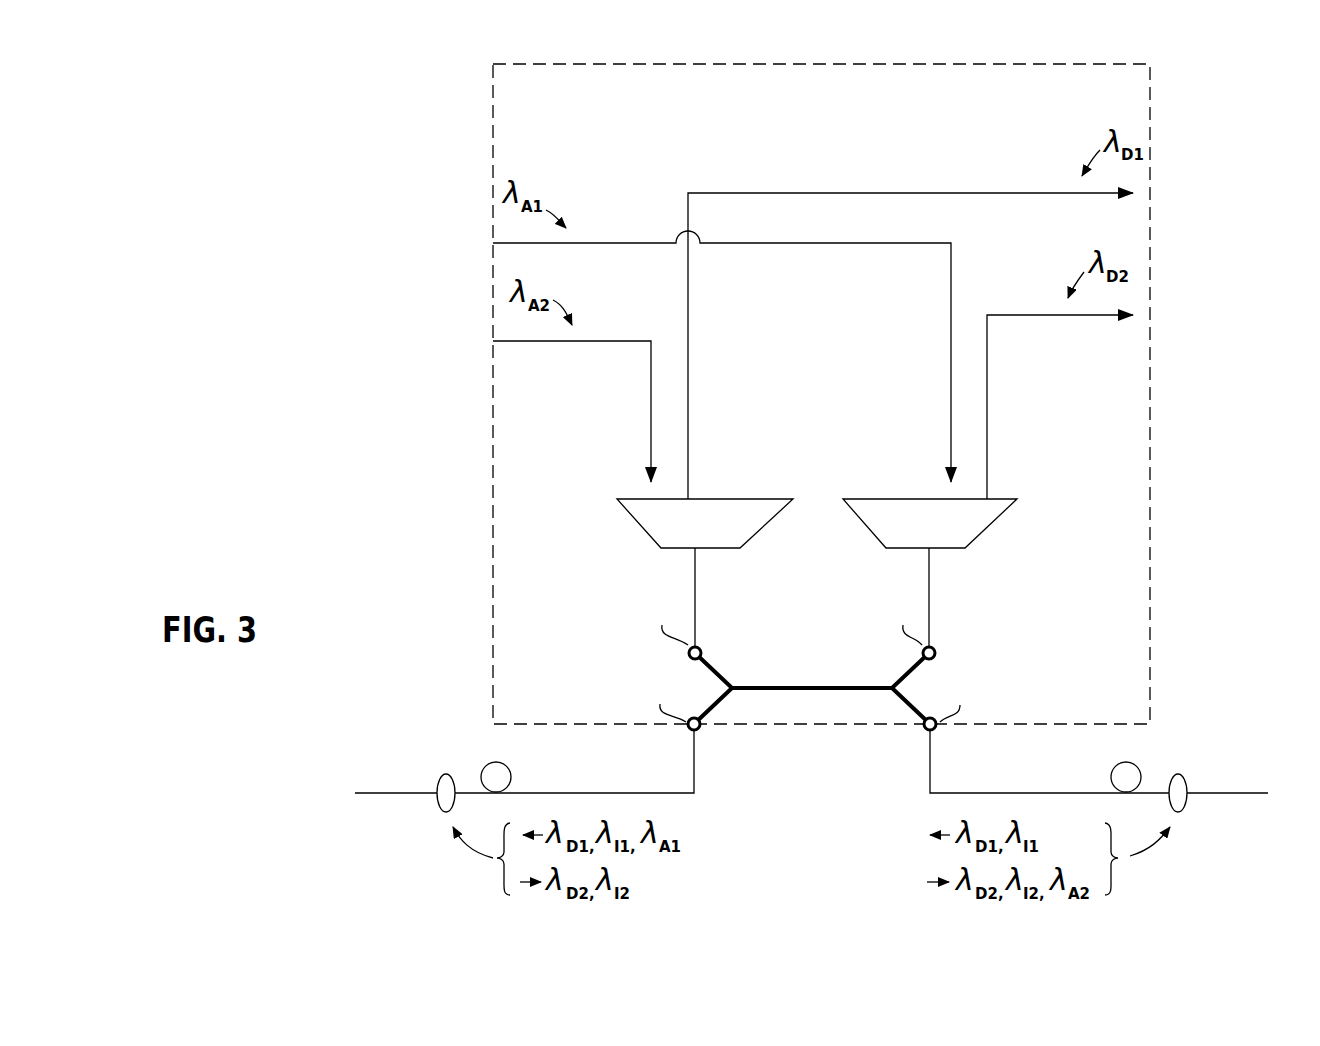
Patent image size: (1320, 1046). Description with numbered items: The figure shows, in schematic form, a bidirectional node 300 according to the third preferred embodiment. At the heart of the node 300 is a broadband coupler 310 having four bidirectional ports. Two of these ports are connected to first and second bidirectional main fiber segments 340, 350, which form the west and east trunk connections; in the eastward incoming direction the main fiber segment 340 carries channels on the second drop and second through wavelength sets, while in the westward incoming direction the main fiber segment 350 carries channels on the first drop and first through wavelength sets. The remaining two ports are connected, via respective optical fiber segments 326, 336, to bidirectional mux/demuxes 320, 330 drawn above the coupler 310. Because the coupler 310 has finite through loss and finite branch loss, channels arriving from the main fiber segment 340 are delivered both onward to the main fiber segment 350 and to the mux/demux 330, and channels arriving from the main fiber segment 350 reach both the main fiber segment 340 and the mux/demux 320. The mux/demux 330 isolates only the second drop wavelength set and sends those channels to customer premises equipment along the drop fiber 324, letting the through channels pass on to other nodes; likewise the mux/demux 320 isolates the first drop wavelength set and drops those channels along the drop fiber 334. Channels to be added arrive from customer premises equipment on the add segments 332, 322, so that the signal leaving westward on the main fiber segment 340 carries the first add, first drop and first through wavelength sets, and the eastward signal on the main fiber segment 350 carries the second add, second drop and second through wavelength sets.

The node 300 is at (1137, 97).
The broadband coupler 310 is at (788, 688).
The mux/demux 320 is at (723, 535).
The add segment 322 is at (644, 341).
The drop fiber 324 is at (1010, 315).
The optical fiber segment 326 is at (696, 570).
The mux/demux 330 is at (947, 535).
The add segment 332 is at (640, 243).
The drop fiber 334 is at (1025, 193).
The optical fiber segment 336 is at (930, 570).
The first bidirectional main fiber segment 340 is at (402, 793).
The second bidirectional main fiber segment 350 is at (1216, 793).